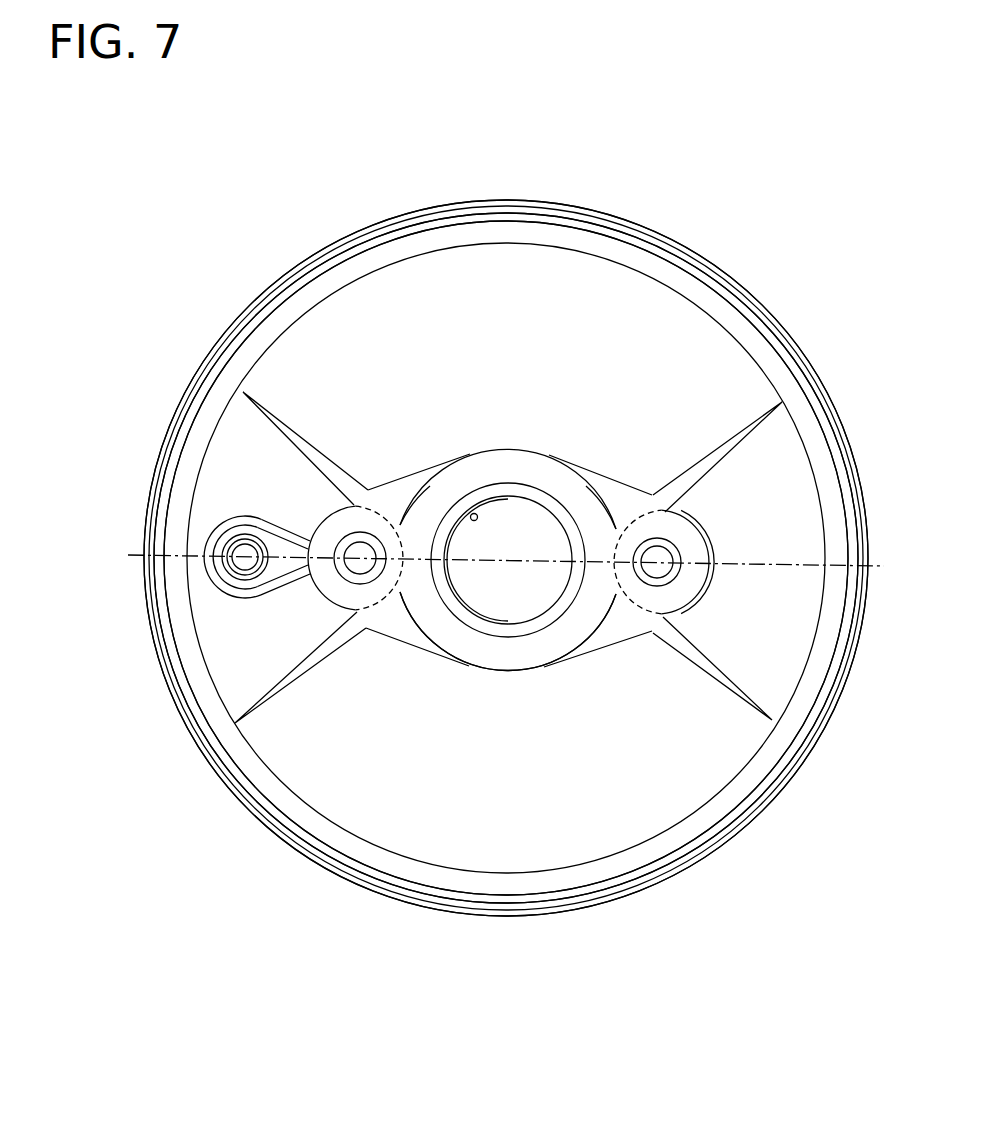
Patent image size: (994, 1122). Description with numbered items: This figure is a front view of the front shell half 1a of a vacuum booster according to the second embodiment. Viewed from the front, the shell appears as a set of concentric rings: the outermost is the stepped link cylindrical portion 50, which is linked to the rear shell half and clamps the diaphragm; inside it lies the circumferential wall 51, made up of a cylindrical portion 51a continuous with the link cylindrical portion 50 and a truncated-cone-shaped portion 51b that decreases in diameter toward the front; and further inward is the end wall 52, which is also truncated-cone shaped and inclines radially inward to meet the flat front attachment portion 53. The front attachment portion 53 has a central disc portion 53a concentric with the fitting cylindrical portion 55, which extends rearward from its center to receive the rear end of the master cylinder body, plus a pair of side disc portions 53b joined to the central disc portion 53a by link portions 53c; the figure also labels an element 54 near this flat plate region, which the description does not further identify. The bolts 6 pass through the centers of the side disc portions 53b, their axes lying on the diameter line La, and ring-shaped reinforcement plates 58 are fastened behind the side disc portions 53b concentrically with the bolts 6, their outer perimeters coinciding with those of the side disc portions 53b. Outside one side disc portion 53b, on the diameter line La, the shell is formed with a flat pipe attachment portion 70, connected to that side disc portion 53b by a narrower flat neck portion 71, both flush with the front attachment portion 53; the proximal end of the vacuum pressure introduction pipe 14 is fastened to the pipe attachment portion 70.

The front shell half 1a is at (761, 299).
The link cylindrical portion 50 is at (527, 200).
The circumferential wall 51 is at (688, 128).
The cylindrical portion 51a is at (668, 245).
The truncated-cone-shaped portion 51b is at (567, 232).
The end wall 52 is at (683, 317).
The front attachment portion 53 is at (680, 515).
The central disc portion 53a is at (521, 655).
The side disc portions 53b is at (363, 600).
The link portions 53c is at (405, 520).
The hub plate 54 is at (582, 483).
The fitting cylindrical portion 55 is at (470, 513).
The reinforcement plates 58 is at (407, 598).
The bolts 6 is at (350, 540).
The pipe attachment portion 70 is at (243, 518).
The neck portion 71 is at (305, 592).
The vacuum pressure introduction pipe 14 is at (288, 532).
The diameter line La is at (747, 563).